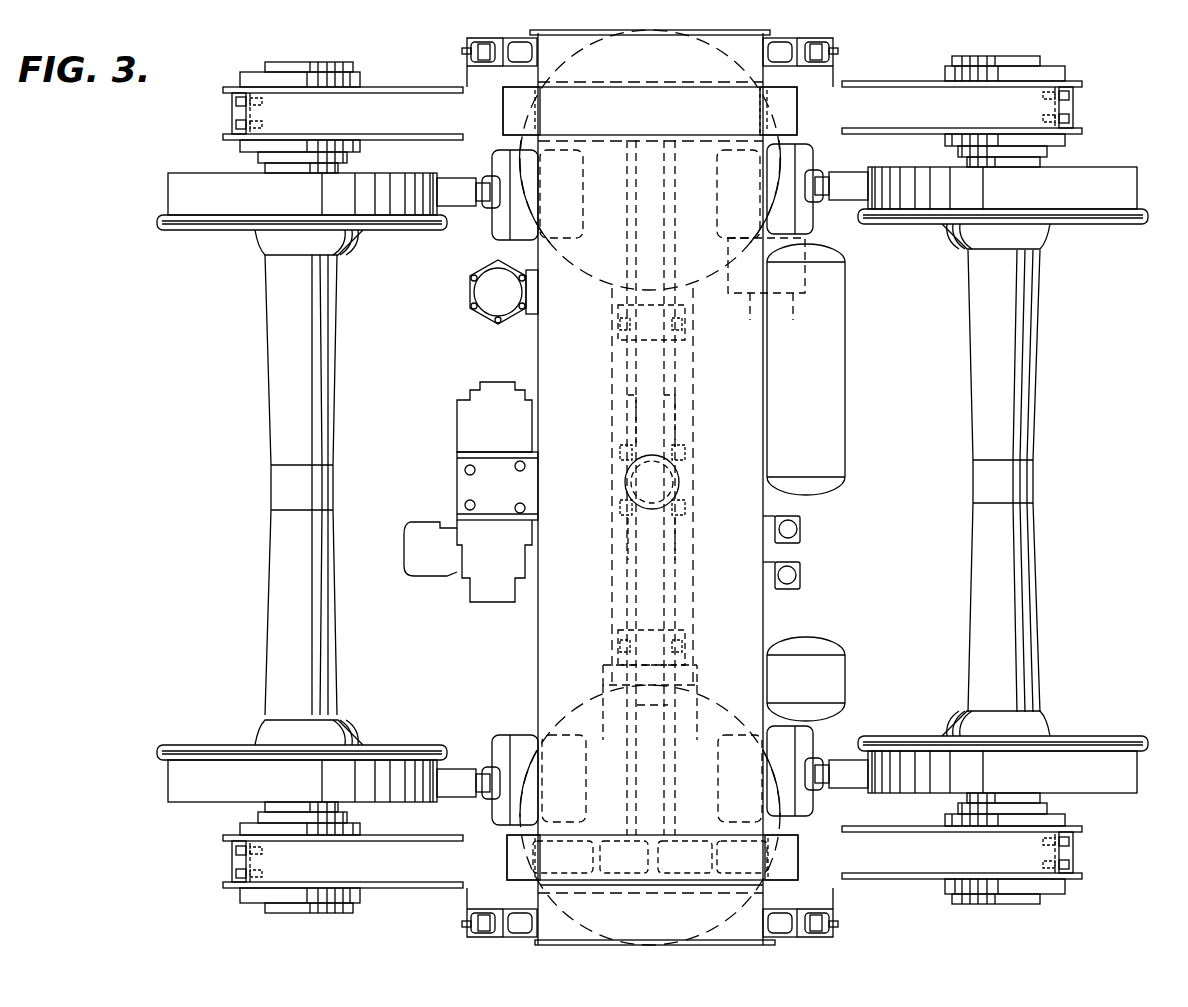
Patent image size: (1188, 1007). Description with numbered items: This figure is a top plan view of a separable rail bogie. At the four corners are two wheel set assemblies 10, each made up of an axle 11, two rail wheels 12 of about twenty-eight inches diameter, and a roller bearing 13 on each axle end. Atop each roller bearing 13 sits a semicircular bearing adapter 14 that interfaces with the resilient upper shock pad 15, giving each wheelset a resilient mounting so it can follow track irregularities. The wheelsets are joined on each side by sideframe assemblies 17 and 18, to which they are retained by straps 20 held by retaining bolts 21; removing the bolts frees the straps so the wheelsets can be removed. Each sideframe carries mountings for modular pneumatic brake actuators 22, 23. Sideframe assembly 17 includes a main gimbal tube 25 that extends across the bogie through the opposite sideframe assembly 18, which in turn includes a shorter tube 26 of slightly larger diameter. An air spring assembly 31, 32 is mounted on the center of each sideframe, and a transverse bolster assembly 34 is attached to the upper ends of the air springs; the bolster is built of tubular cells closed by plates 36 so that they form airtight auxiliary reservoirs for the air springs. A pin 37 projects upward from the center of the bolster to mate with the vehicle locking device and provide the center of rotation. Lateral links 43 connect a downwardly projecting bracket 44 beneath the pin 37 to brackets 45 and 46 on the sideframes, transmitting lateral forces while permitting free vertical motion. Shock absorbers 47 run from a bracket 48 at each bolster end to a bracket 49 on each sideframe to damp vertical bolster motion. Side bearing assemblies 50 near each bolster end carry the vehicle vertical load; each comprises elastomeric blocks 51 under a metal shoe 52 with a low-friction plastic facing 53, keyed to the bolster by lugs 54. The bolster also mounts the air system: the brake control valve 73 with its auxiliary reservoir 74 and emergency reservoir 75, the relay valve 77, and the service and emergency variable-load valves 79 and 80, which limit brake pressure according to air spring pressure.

The wheel set assembly 10 is at (1102, 240).
The axle 11 is at (278, 358).
The rail wheel 12 is at (200, 232).
The roller bearing 13 is at (292, 62).
The bearing adapter 14 is at (340, 72).
The upper shock pad 15 is at (356, 82).
The sideframe assembly 17 is at (897, 82).
The sideframe assembly 18 is at (900, 880).
The strap 20 is at (250, 108).
The retaining bolt 21 is at (234, 124).
The brake actuator 22 is at (830, 228).
The brake actuator 23 is at (500, 238).
The main gimbal tube 25 is at (694, 416).
The shorter tube 26 is at (700, 680).
The air spring assembly 31 is at (590, 52).
The air spring assembly 32 is at (592, 922).
The bolster assembly 34 is at (518, 343).
The plate 36 is at (708, 30).
The pin 37 is at (662, 482).
The lateral link 43 is at (660, 380).
The bracket 44 is at (690, 540).
The bracket 45 is at (690, 320).
The bracket 46 is at (690, 652).
The shock absorber 47 is at (472, 34).
The bracket 48 is at (518, 36).
The bracket 49 is at (466, 72).
The side bearing assembly 50 is at (800, 108).
The elastomeric block 51 is at (664, 840).
The metal shoe 52 is at (503, 110).
The low-friction plastic facing 53 is at (630, 122).
The lug 54 is at (760, 102).
The brake control valve 73 is at (470, 598).
The auxiliary reservoir 74 is at (846, 680).
The emergency reservoir 75 is at (846, 422).
The relay valve 77 is at (470, 294).
The service variable-load valve 79 is at (802, 572).
The emergency variable-load valve 80 is at (802, 528).